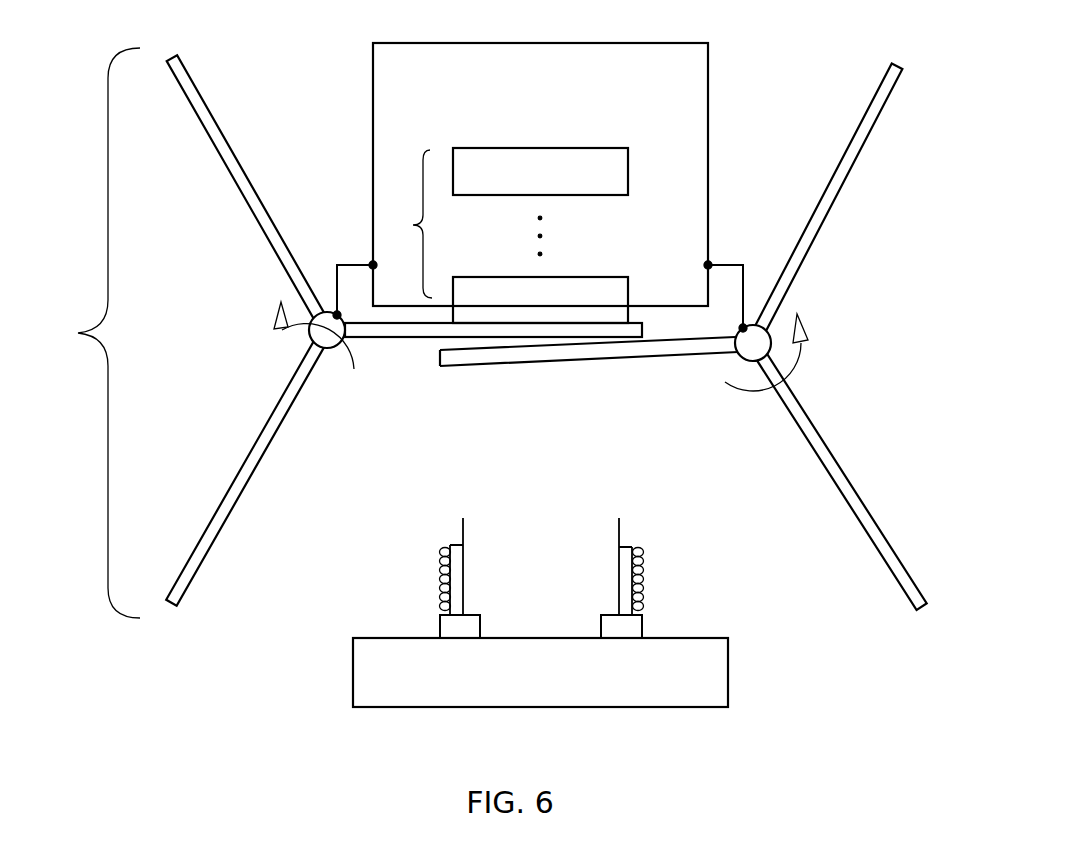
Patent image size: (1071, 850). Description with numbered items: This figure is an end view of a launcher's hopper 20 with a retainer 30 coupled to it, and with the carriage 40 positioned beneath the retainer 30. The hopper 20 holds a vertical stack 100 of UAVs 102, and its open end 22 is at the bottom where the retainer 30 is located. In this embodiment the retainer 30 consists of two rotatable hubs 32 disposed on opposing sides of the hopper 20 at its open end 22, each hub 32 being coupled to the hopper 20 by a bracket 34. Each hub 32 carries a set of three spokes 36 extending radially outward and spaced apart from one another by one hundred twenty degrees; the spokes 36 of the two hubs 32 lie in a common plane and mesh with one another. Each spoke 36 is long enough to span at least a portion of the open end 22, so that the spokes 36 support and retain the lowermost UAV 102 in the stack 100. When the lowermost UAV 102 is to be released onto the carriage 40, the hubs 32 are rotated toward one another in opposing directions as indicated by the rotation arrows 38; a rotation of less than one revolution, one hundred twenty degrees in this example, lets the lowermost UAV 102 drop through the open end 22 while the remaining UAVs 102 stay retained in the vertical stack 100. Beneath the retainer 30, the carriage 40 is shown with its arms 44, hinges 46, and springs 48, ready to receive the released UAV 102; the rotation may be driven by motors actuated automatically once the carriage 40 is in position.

The hopper 20 is at (373, 78).
The open end 22 is at (667, 306).
The retainer 30 is at (76, 333).
The rotatable hub 32 is at (344, 348).
The bracket 34 is at (337, 265).
The spoke 36 is at (225, 150).
The rotation arrow 38 is at (282, 352).
The carriage 40 is at (353, 675).
The arm 44 is at (462, 530).
The hinge 46 is at (440, 625).
The spring 48 is at (440, 578).
The vertical stack 100 is at (546, 189).
The UAV 102 is at (603, 290).